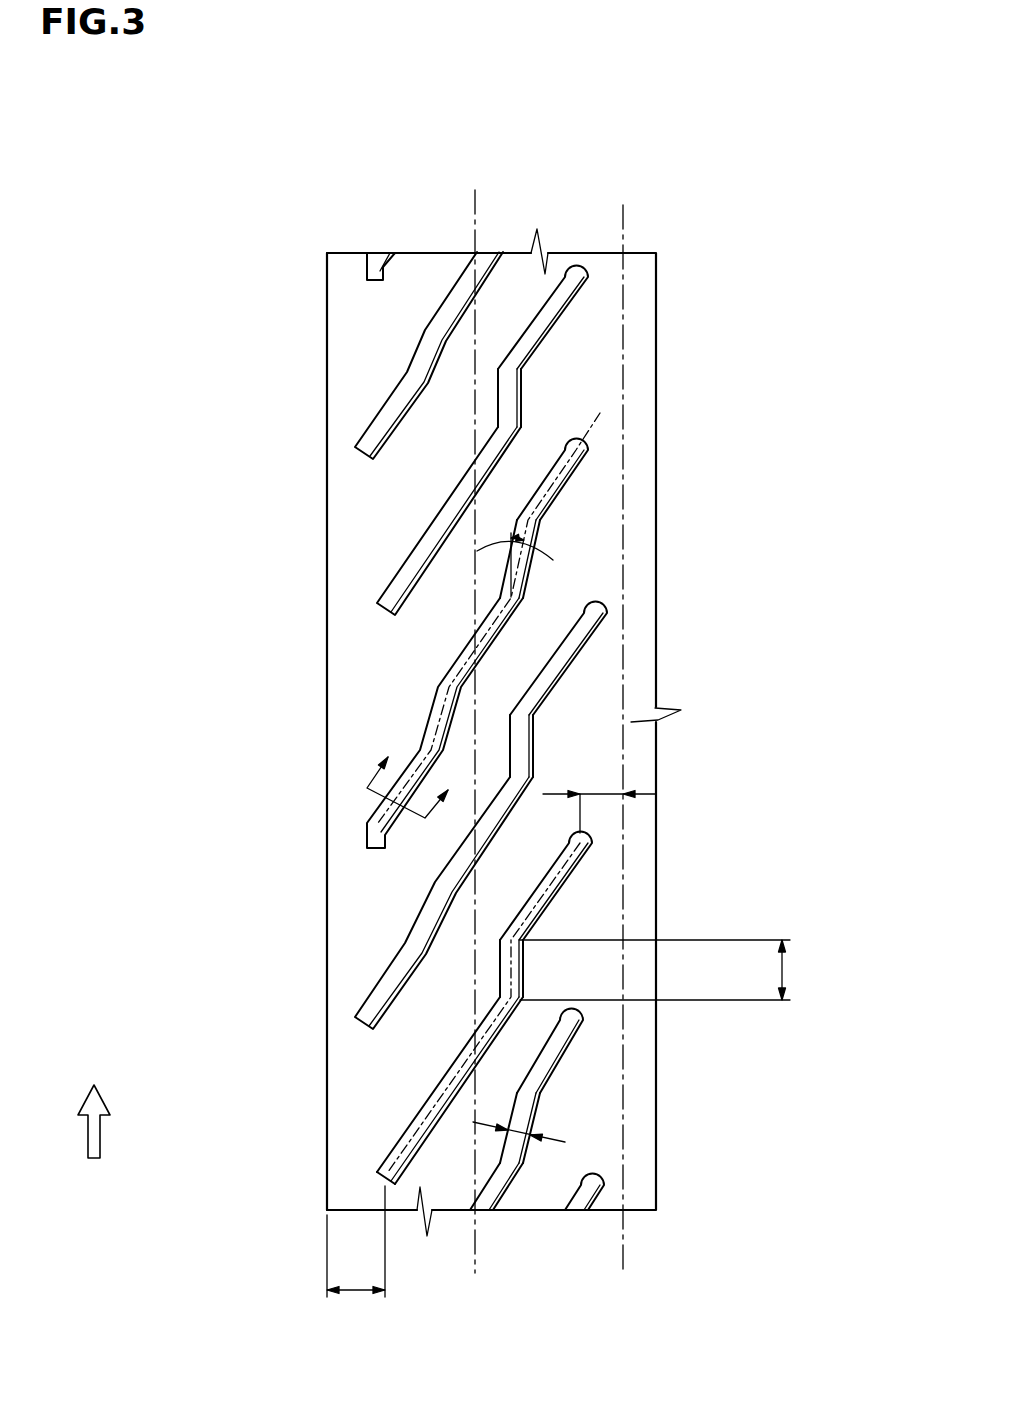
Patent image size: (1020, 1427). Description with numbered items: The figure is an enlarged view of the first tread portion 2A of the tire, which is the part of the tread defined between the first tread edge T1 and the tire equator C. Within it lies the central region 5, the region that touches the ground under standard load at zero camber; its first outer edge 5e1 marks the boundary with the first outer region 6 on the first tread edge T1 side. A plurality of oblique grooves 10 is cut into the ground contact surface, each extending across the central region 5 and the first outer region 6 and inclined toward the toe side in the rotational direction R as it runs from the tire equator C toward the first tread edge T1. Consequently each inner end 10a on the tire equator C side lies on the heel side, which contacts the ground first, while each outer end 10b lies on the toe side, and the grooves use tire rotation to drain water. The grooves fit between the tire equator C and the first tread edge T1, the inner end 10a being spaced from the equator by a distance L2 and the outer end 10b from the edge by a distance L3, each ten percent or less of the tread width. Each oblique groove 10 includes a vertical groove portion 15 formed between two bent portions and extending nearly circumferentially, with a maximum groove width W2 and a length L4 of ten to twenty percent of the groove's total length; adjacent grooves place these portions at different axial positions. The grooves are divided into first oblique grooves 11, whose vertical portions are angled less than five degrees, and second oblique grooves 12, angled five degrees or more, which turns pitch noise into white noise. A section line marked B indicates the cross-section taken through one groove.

The central region 5 is at (607, 292).
The first tread edge T1 is at (327, 333).
The first tread portion 2A is at (515, 292).
The tire equator C is at (620, 722).
The first outer edge 5e1 is at (477, 346).
The first outer region 6 is at (403, 303).
The oblique groove 10 is at (175, 462).
The inner end 10a is at (594, 606).
The outer end 10b is at (383, 1186).
The first oblique groove 11 is at (420, 553).
The second oblique groove 12 is at (445, 711).
The vertical groove portion 15 is at (509, 401).
The distance L2 is at (599, 798).
The distance L3 is at (356, 1256).
The length L4 is at (675, 970).
The maximum groove width W2 is at (536, 1125).
The section B- B is at (419, 773).
The rotational direction R is at (94, 1104).